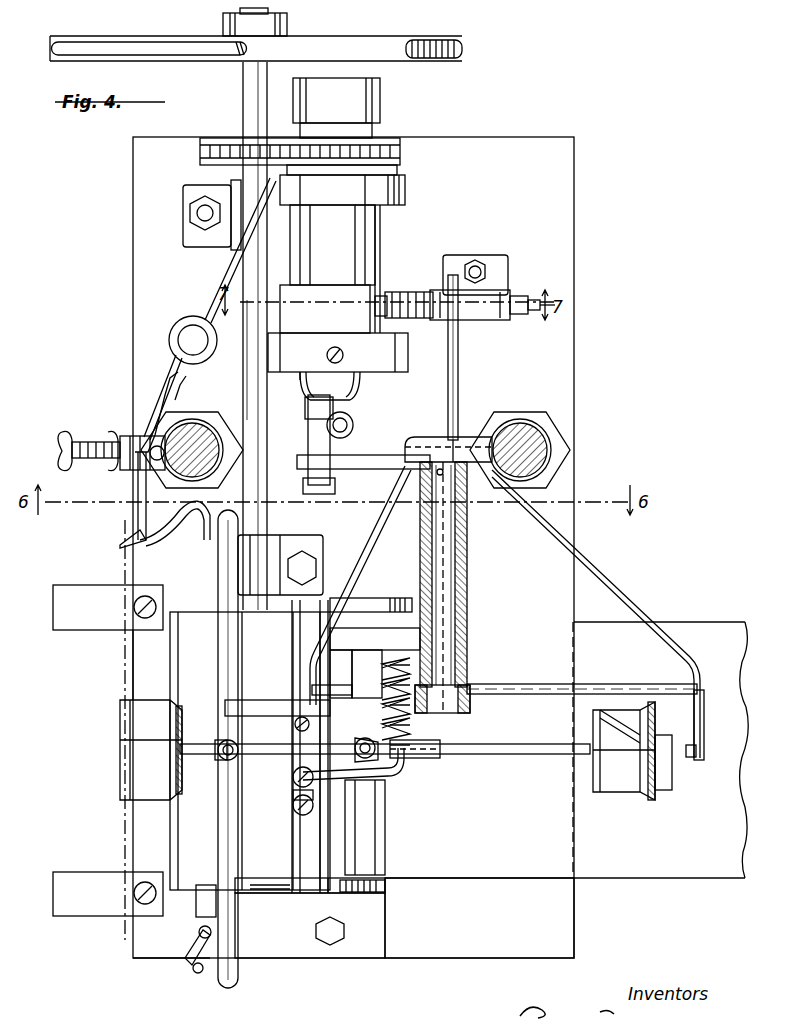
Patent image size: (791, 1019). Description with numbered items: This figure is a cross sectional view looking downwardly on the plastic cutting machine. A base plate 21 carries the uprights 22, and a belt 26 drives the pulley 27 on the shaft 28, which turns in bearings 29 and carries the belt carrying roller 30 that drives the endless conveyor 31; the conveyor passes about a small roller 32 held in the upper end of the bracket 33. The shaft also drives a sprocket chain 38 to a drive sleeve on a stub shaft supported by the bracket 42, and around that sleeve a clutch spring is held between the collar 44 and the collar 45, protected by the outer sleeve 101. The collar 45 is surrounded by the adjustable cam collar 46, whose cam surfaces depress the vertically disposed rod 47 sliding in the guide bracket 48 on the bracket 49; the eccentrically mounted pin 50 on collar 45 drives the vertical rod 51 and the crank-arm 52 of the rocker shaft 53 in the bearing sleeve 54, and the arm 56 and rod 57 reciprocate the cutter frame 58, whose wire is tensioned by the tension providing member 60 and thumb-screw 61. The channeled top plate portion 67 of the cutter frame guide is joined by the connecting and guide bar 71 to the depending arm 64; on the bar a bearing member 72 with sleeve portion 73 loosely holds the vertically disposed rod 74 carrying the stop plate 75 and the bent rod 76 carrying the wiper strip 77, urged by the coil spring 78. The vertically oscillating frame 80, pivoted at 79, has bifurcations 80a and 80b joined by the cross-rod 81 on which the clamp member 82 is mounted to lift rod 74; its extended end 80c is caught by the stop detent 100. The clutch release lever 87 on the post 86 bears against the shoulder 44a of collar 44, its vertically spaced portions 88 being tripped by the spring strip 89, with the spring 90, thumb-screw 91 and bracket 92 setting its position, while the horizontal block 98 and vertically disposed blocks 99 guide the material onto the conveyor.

The base plate 21 is at (566, 148).
The uprights 22 is at (178, 430).
The belt 26 is at (463, 50).
The pulley 27 is at (420, 38).
The shaft 28 is at (243, 97).
The bearings 29 is at (222, 248).
The belt carrying roller 30 is at (278, 895).
The endless conveyor 31 is at (700, 872).
The small roller 32 is at (386, 606).
The bracket 33 is at (385, 892).
The sprocket chain 38 is at (388, 140).
The bracket 42 is at (380, 92).
The collar 44 is at (336, 198).
The shoulder 44a is at (282, 180).
The collar 45 is at (325, 292).
The cam collar 46 is at (272, 290).
The vertically disposed rod 47 is at (418, 290).
The guide bracket 48 is at (432, 322).
The bracket 49 is at (505, 285).
The eccentrically mounted pin 50 is at (358, 395).
The vertical rod 51 is at (350, 425).
The crank-arm 52 is at (366, 470).
The rocker shaft 53 is at (462, 574).
The bearing sleeve 54 is at (468, 600).
The arm 56 is at (280, 705).
The rod 57 is at (238, 752).
The cutter frame 58 is at (232, 988).
The tension providing member 60 is at (190, 962).
The thumb-screw 61 is at (197, 974).
The depending arm 64 is at (650, 800).
The channeled top plate portion 67 is at (150, 800).
The connecting and guide bar 71 is at (498, 755).
The bearing member 72 is at (437, 758).
The sleeve portion 73 is at (420, 742).
The vertically disposed rod 74 is at (400, 762).
The stop plate 75 is at (348, 838).
The bent rod 76 is at (380, 780).
The wiper strip 77 is at (305, 893).
The coil spring 78 is at (375, 662).
The pivot 79 is at (462, 440).
The vertically oscillating frame 80 is at (459, 372).
The bifurcation 80a is at (378, 533).
The bifurcation 80b is at (620, 583).
The extended end 80c is at (700, 758).
The cross-rod 81 is at (545, 681).
The clamp member 82 is at (366, 650).
The post 86 is at (185, 340).
The clutch release lever 87 is at (212, 312).
The vertically spaced portions 88 is at (140, 512).
The spring strip 89 is at (125, 542).
The spring 90 is at (176, 412).
The thumb-screw 91 is at (92, 458).
The bracket 92 is at (125, 468).
The horizontal block 98 is at (131, 671).
The vertically disposed blocks 99 is at (90, 592).
The stop detent 100 is at (668, 740).
The outer sleeve 101 is at (381, 240).